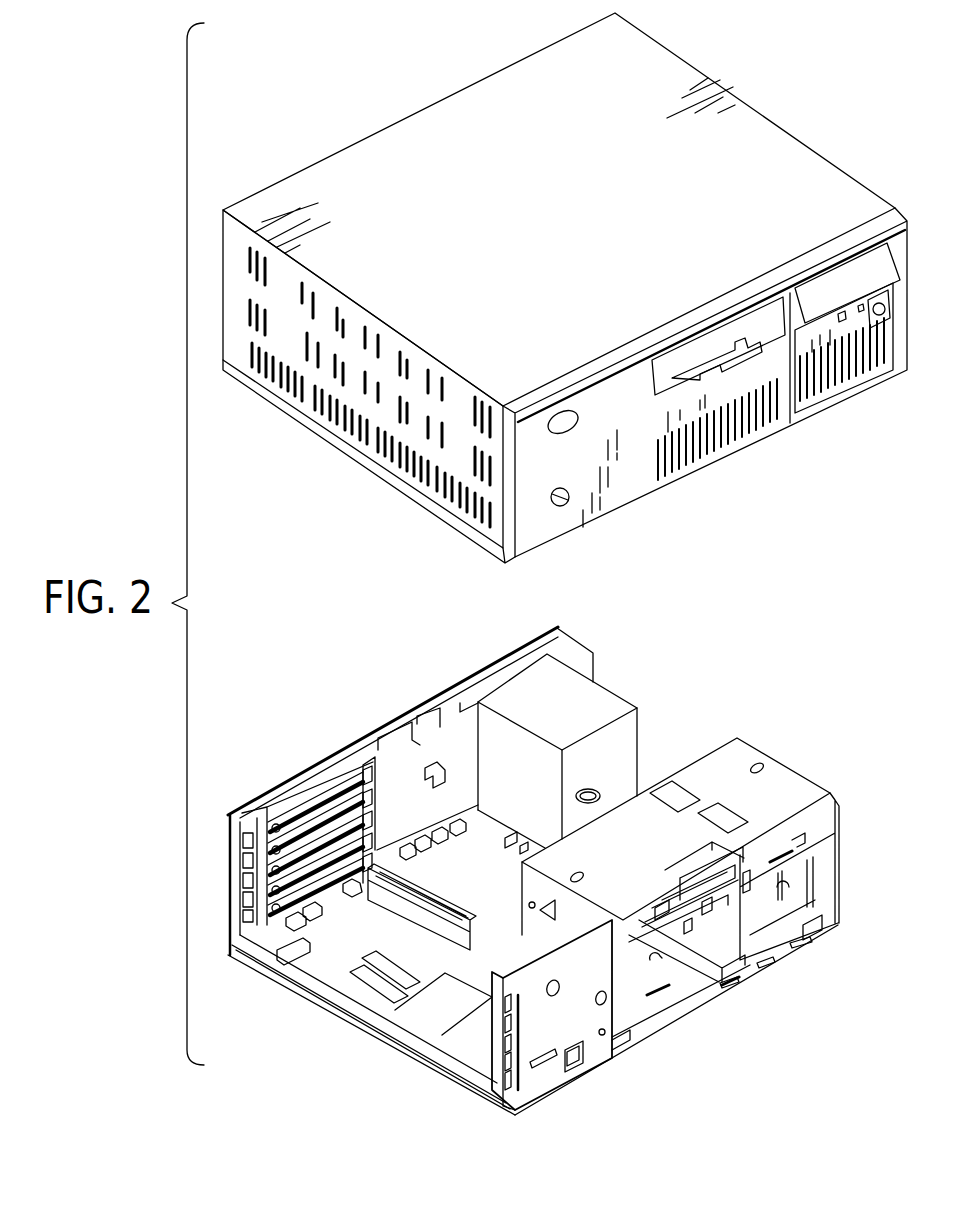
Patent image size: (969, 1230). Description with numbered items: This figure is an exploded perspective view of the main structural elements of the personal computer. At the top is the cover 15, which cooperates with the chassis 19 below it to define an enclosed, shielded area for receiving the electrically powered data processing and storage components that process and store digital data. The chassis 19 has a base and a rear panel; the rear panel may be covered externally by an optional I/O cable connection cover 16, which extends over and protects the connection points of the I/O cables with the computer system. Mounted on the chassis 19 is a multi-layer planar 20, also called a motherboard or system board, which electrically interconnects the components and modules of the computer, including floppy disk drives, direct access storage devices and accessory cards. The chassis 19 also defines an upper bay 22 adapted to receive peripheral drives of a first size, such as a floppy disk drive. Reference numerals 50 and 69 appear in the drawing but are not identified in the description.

The cover 15 is at (400, 122).
The I/O cable connection cover 16 is at (300, 775).
The chassis 19 is at (352, 1022).
The planar 20 is at (303, 950).
The upper bay 22 is at (737, 890).
The connector 50 is at (422, 910).
The drive bay 69 is at (490, 1045).